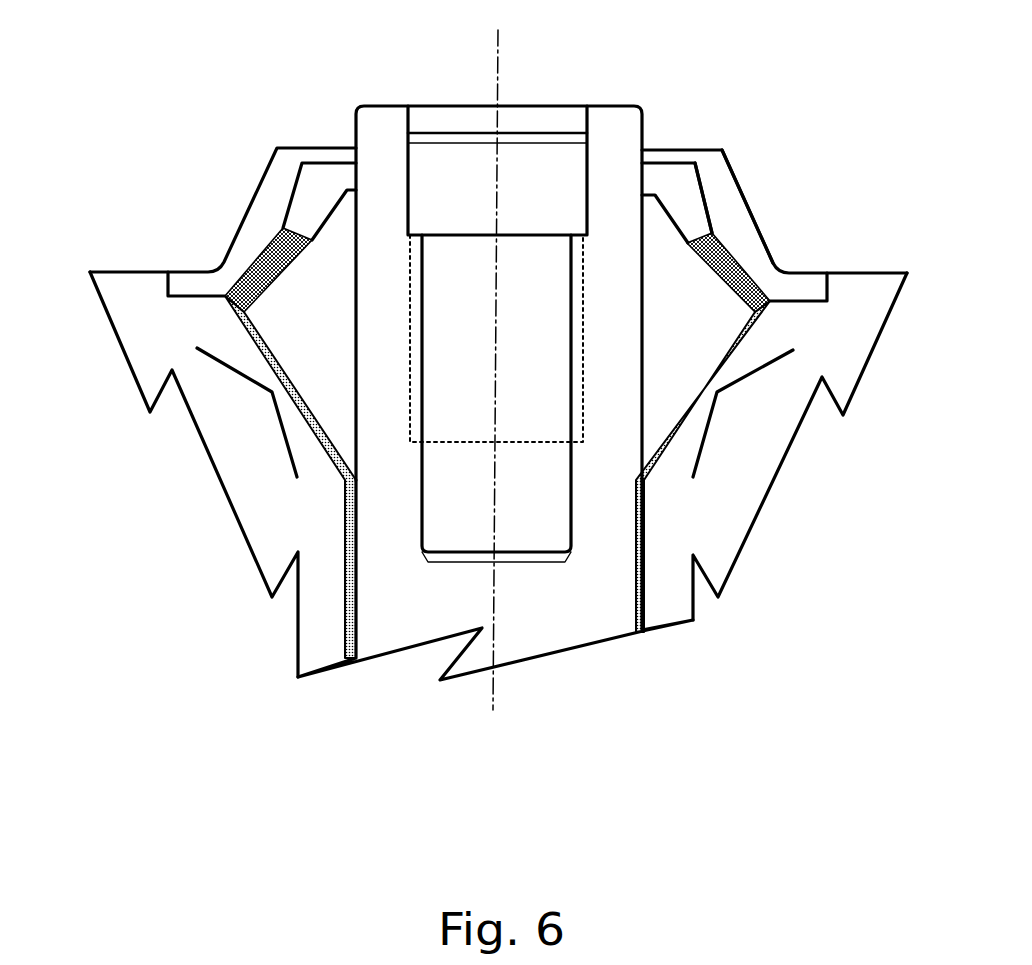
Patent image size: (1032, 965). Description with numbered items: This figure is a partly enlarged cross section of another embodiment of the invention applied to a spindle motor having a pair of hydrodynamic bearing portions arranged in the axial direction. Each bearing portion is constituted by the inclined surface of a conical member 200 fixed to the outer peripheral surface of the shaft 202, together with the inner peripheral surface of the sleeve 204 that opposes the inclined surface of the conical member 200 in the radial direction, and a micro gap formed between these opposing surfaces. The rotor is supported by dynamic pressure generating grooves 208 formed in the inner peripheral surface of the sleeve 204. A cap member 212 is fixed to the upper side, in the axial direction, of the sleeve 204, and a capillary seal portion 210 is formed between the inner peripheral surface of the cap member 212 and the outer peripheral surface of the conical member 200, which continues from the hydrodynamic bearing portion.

The conical member 200 is at (325, 305).
The shaft 202 is at (530, 613).
The sleeve 204 is at (250, 465).
The dynamic pressure generating grooves 208 is at (740, 380).
The capillary seal portion 210 is at (688, 178).
The cap member 212 is at (742, 243).